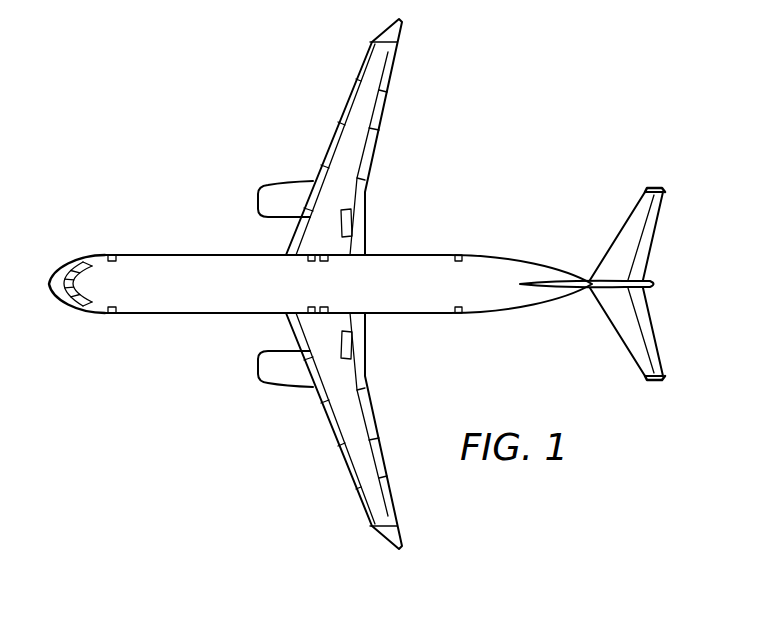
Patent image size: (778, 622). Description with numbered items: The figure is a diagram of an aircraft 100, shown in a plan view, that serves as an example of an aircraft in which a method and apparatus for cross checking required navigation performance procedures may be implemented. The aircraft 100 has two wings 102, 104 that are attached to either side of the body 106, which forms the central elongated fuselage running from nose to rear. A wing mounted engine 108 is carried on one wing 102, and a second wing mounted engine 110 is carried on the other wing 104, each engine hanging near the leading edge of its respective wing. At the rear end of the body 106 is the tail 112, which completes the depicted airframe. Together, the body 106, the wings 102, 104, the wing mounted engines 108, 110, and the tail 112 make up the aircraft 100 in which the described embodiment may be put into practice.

The aircraft 100 is at (513, 137).
The wing 102 is at (330, 144).
The wing 104 is at (327, 424).
The body 106 is at (163, 255).
The wing mounted engine 108 is at (258, 200).
The wing mounted engine 110 is at (258, 372).
The tail 112 is at (656, 236).